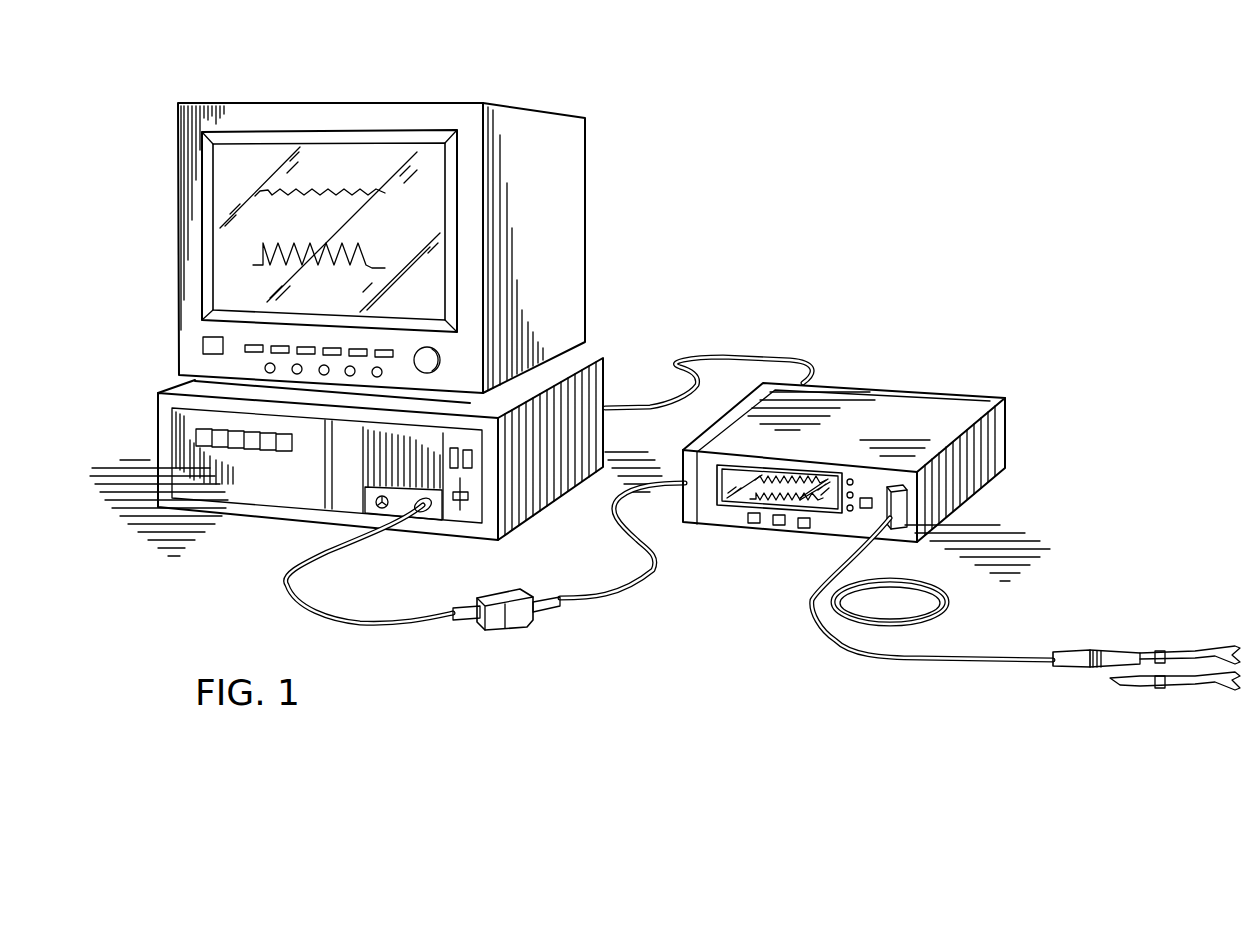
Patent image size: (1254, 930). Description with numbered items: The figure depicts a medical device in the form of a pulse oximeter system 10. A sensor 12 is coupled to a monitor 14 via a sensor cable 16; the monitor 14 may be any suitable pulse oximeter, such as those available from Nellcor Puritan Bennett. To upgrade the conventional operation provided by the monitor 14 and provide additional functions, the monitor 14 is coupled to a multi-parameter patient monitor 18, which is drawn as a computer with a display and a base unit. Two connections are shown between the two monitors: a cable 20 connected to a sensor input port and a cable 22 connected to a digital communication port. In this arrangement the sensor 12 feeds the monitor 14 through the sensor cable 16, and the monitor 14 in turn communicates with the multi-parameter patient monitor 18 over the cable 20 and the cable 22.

The pulse oximeter system 10 is at (914, 184).
The sensor 12 is at (1147, 640).
The monitor 14 is at (933, 378).
The sensor cable 16 is at (843, 655).
The multi-parameter patient monitor 18 is at (474, 77).
The cable 20 is at (351, 635).
The cable 22 is at (755, 335).